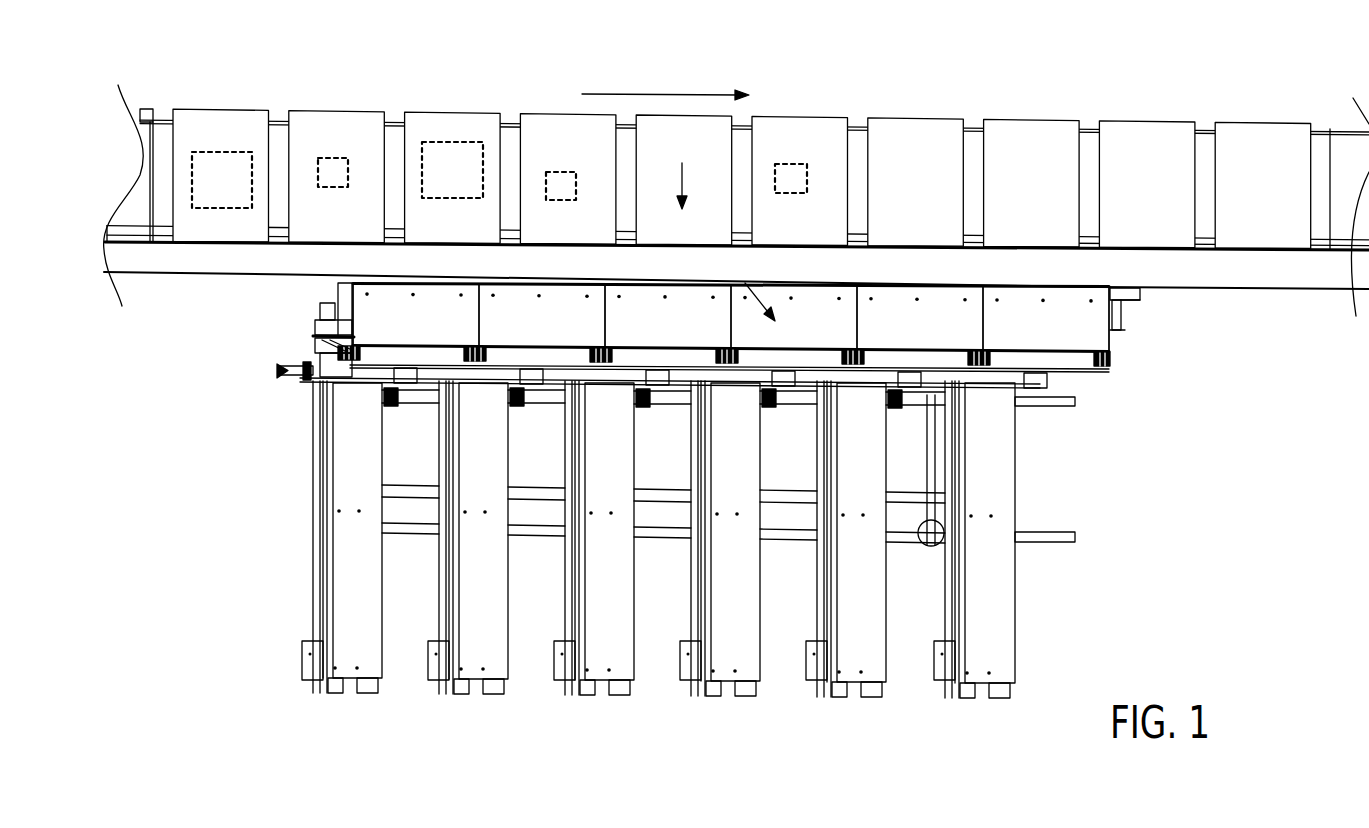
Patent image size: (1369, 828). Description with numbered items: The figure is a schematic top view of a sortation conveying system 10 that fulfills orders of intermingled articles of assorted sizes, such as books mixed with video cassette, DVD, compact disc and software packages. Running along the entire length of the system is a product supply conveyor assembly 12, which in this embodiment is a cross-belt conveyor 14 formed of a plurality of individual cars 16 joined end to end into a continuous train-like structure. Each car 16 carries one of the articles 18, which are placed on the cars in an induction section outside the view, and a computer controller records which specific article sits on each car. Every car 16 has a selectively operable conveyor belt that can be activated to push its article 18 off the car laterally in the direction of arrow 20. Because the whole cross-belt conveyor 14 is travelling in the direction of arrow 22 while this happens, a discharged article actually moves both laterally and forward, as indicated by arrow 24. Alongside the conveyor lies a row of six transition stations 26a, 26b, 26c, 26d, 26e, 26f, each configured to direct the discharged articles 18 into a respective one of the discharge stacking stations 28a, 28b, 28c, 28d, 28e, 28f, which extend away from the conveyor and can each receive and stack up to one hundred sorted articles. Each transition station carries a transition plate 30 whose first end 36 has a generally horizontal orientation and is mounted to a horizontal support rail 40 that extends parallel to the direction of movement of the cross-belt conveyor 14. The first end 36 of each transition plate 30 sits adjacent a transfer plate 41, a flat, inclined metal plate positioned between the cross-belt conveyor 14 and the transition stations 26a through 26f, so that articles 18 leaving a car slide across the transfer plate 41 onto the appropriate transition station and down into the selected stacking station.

The sortation conveying system 10 is at (1183, 372).
The product supply conveyor assembly 12 is at (736, 170).
The cross-belt conveyor 14 is at (776, 113).
The individual car 16 is at (1147, 118).
The article 18 is at (452, 141).
The arrow 20 is at (680, 180).
The arrow 22 is at (662, 92).
The arrow 24 is at (761, 287).
The transition station 26a is at (390, 300).
The transition station 26b is at (520, 300).
The transition station 26c is at (640, 300).
The transition station 26d is at (805, 300).
The transition station 26e is at (905, 300).
The transition station 26f is at (1055, 303).
The discharge stacking station 28a is at (368, 655).
The discharge stacking station 28b is at (494, 656).
The discharge stacking station 28c is at (620, 657).
The discharge stacking station 28d is at (746, 658).
The discharge stacking station 28e is at (872, 659).
The discharge stacking station 28f is at (1000, 660).
The transition plate 30 is at (355, 297).
The first end 36 is at (1040, 283).
The horizontal support rail 40 is at (1133, 300).
The transfer plate 41 is at (1290, 278).